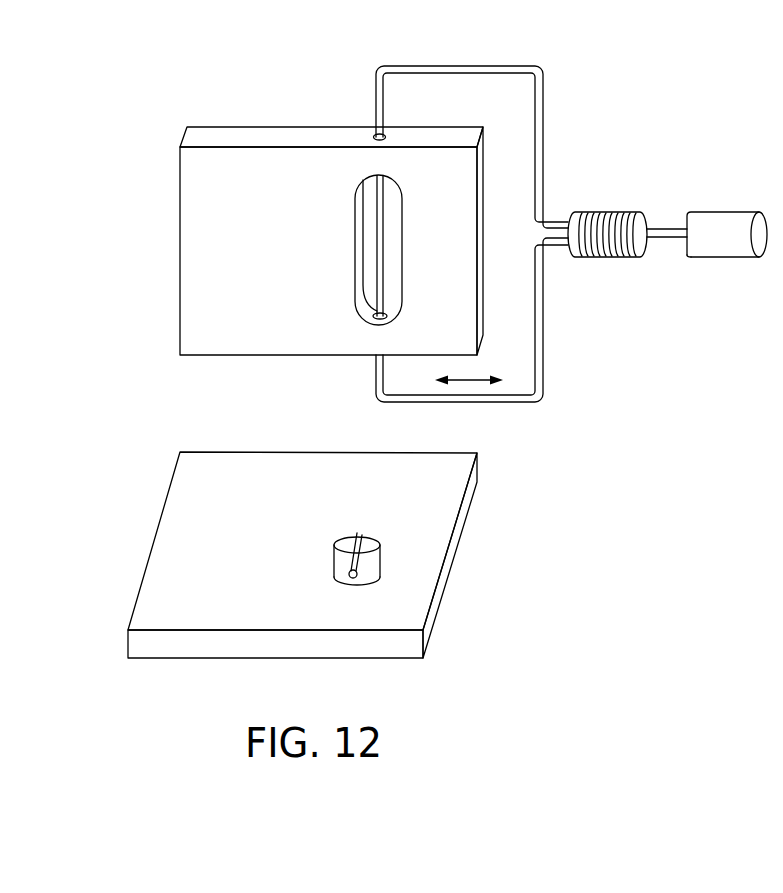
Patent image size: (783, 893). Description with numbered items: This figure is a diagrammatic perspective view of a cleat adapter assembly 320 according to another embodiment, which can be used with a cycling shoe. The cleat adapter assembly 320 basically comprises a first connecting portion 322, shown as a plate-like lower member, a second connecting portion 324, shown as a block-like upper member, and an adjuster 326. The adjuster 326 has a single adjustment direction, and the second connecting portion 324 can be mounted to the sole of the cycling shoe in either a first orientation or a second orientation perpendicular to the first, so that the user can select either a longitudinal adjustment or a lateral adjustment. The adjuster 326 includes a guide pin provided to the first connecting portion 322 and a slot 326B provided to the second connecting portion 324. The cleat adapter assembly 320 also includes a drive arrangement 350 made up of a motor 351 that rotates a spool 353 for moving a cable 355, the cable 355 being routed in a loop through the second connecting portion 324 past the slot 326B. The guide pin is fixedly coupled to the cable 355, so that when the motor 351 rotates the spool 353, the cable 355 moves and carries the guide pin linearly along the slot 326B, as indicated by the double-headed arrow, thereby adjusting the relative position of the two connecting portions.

The cleat adapter assembly 320 is at (262, 92).
The first connecting portion 322 is at (165, 489).
The second connecting portion 324 is at (172, 290).
The adjuster 326 is at (338, 540).
The slot 326B is at (359, 238).
The actuator assembly 350 is at (660, 183).
The motor 351 is at (724, 268).
The spool 353 is at (600, 268).
The cable 355 is at (545, 108).